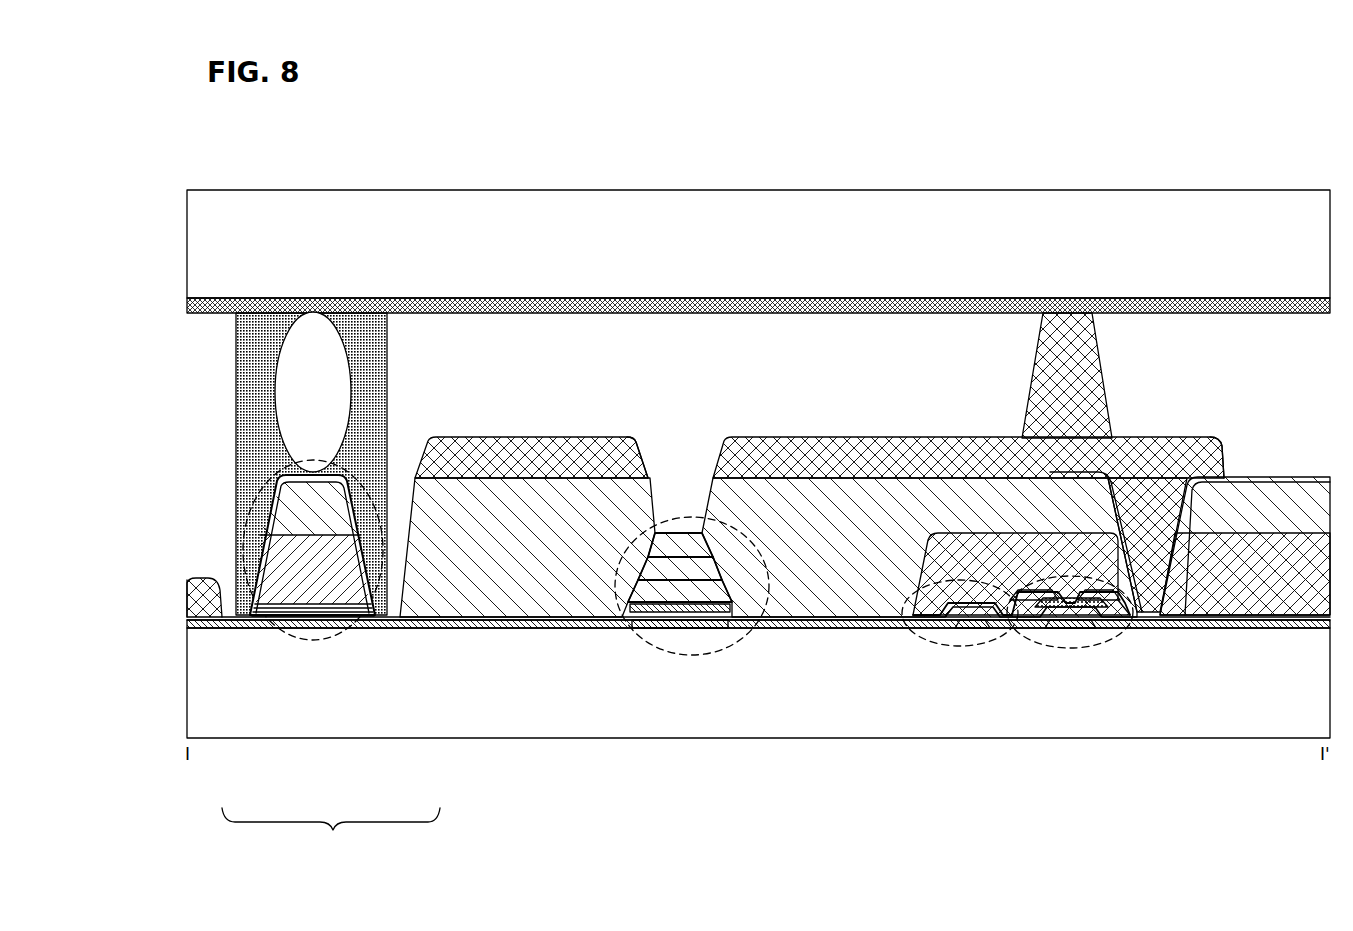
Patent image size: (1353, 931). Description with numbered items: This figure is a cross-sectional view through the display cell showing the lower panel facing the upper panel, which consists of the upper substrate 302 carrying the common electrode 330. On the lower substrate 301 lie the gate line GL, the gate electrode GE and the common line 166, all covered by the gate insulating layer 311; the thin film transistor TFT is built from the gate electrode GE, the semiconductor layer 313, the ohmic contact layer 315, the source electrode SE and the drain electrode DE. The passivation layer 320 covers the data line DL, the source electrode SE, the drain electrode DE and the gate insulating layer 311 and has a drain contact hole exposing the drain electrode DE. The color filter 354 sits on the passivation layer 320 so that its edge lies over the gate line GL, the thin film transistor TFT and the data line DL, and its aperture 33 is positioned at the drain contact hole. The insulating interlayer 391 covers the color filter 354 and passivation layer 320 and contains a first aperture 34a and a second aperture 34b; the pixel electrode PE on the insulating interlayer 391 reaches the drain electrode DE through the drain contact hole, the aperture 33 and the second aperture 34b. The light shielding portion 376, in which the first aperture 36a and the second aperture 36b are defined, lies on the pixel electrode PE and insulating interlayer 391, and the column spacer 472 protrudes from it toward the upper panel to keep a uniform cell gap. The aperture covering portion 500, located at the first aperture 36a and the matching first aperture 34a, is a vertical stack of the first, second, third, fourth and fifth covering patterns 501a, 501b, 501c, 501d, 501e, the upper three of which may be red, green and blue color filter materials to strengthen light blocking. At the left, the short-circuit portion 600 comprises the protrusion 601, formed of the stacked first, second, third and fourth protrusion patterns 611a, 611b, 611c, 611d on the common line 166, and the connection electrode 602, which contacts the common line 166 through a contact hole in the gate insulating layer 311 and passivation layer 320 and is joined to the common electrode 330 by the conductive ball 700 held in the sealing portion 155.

The lower substrate 301 is at (207, 693).
The upper substrate 302 is at (630, 226).
The common electrode 330 is at (716, 305).
The sealing portion 155 is at (252, 405).
The conductive ball 700 is at (306, 362).
The short-circuit portion 600 is at (261, 550).
The connection electrode 602 is at (330, 518).
The protrusion 601 is at (331, 832).
The first protrusion pattern 611a is at (258, 618).
The second protrusion pattern 611b is at (290, 618).
The third protrusion pattern 611c is at (330, 610).
The fourth protrusion pattern 611d is at (348, 615).
The common line 166 is at (200, 607).
The light shielding portion 376 is at (538, 445).
The column spacer 472 is at (1066, 305).
The insulating interlayer 391 is at (535, 595).
The color filter 354 is at (928, 600).
The aperture 33 is at (1148, 572).
The pixel electrode PE is at (1302, 478).
The first aperture 36a is at (665, 458).
The second aperture 36b is at (1240, 456).
The first aperture 34a is at (678, 512).
The second aperture 34b is at (1130, 505).
The aperture covering portion 500 is at (715, 677).
The first covering pattern 501a is at (657, 630).
The second covering pattern 501b is at (688, 612).
The third covering pattern 501c is at (695, 595).
The fourth covering pattern 501d is at (705, 575).
The fifth covering pattern 501e is at (725, 555).
The passivation layer 320 is at (210, 616).
The gate insulating layer 311 is at (200, 626).
The thin film transistor TFT is at (1035, 715).
The gate line GL is at (972, 630).
The data line DL is at (968, 630).
The gate electrode GE is at (1065, 630).
The semiconductor layer 313 is at (1040, 612).
The ohmic contact layer 315 is at (1090, 606).
The source electrode SE is at (1022, 606).
The drain electrode DE is at (1110, 606).